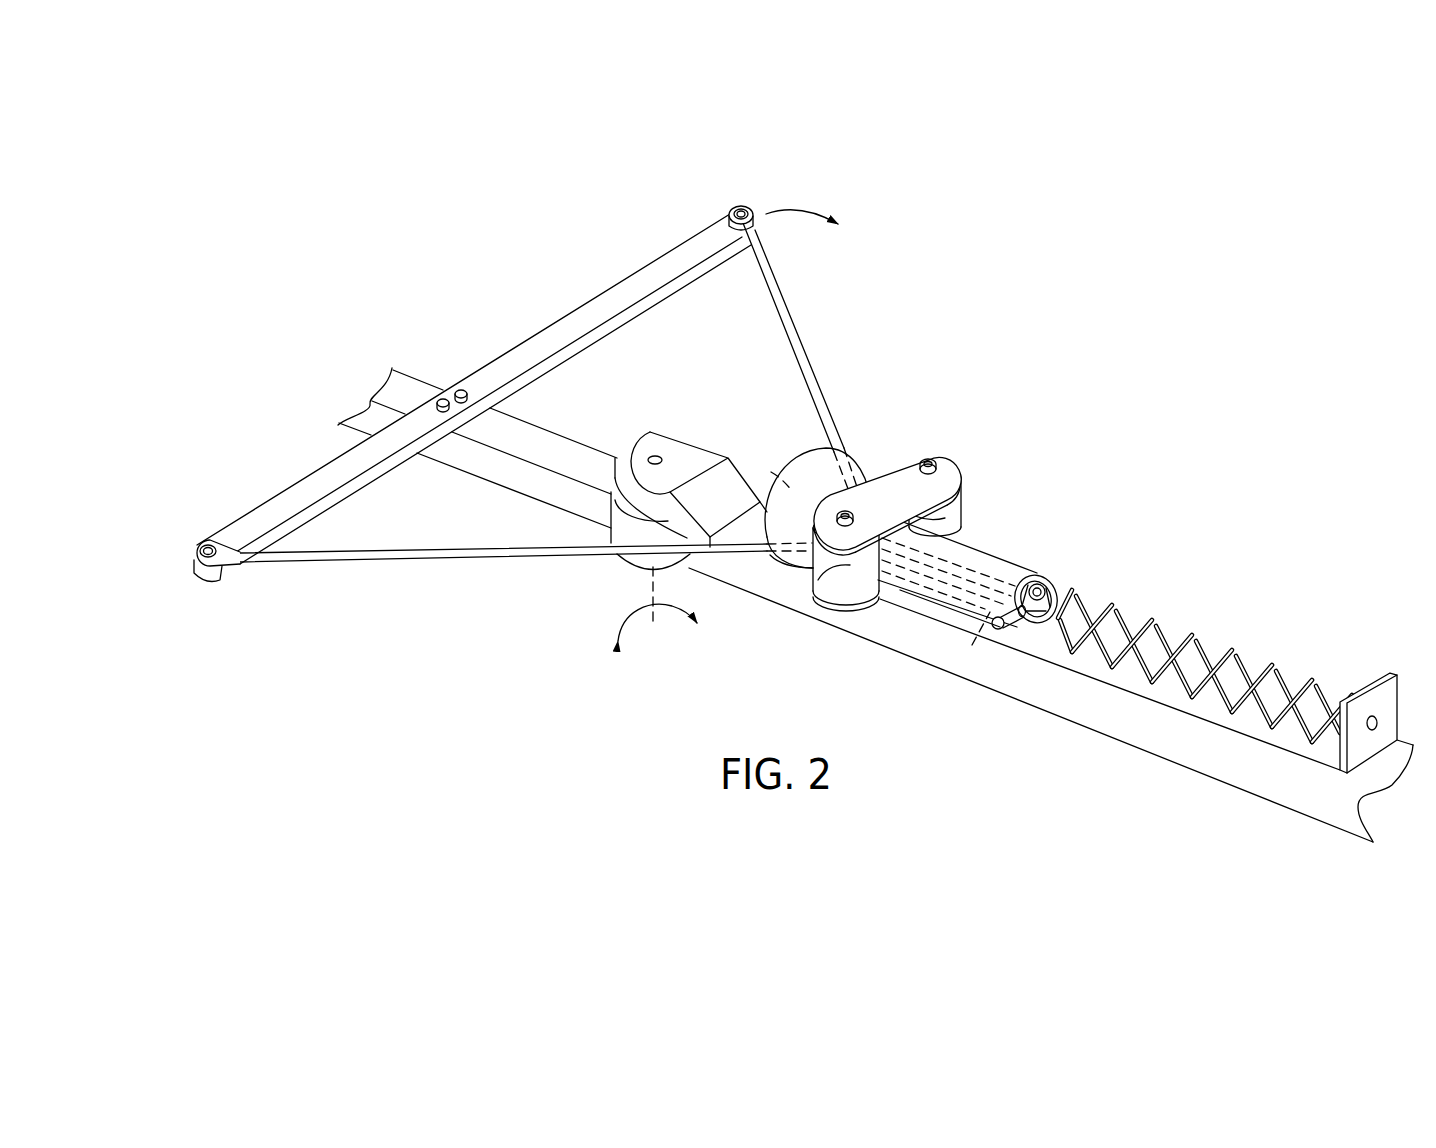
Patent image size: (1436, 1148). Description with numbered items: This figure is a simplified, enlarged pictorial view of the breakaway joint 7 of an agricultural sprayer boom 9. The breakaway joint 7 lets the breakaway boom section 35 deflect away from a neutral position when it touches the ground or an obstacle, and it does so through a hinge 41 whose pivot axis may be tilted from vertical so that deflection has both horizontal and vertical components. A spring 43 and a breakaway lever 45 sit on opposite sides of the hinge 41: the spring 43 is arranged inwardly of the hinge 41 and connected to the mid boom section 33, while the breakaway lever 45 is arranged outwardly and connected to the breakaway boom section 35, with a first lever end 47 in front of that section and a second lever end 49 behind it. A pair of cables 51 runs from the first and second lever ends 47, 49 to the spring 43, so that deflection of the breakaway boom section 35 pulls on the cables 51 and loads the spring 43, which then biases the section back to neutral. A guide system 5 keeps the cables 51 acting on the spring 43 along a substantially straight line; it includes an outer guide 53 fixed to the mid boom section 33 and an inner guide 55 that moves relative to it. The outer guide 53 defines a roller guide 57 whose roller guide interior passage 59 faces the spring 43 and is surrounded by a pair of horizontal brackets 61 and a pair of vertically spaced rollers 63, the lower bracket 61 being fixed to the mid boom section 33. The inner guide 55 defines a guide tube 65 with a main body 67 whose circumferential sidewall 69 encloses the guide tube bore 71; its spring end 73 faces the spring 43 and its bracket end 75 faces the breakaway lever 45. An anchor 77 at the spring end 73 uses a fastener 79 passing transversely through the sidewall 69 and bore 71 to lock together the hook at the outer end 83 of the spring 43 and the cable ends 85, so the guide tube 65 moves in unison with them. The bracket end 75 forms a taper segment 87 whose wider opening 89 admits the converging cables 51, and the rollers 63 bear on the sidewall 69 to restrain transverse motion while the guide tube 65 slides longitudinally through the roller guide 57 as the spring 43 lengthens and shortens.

The guide system 5 is at (578, 648).
The breakaway joint 7 is at (836, 162).
The boom 9 is at (1213, 306).
The mid boom section 33 is at (1238, 818).
The breakaway boom section 35 is at (326, 346).
The hinge 41 is at (652, 425).
The spring 43 is at (1317, 637).
The breakaway lever 45 is at (456, 336).
The first lever end 47 is at (706, 201).
The second lever end 49 is at (193, 534).
The cable 51 is at (796, 328).
The outer guide 53 is at (959, 424).
The inner guide 55 is at (1098, 527).
The roller guide 57 is at (907, 457).
The roller guide interior passage 59 is at (975, 515).
The brackets 61 is at (937, 462).
The rollers 63 is at (966, 492).
The guide tube 65 is at (953, 616).
The main body 67 is at (1011, 553).
The circumferential sidewall 69 is at (1048, 578).
The guide tube bore 71 is at (856, 508).
The spring end 73 is at (1072, 581).
The bracket end 75 is at (801, 441).
The anchor 77 is at (998, 637).
The fastener 79 is at (1000, 633).
The outer end of spring 83 is at (1092, 584).
The cable ends 85 is at (969, 643).
The taper segment 87 is at (784, 571).
The opening 89 is at (771, 472).